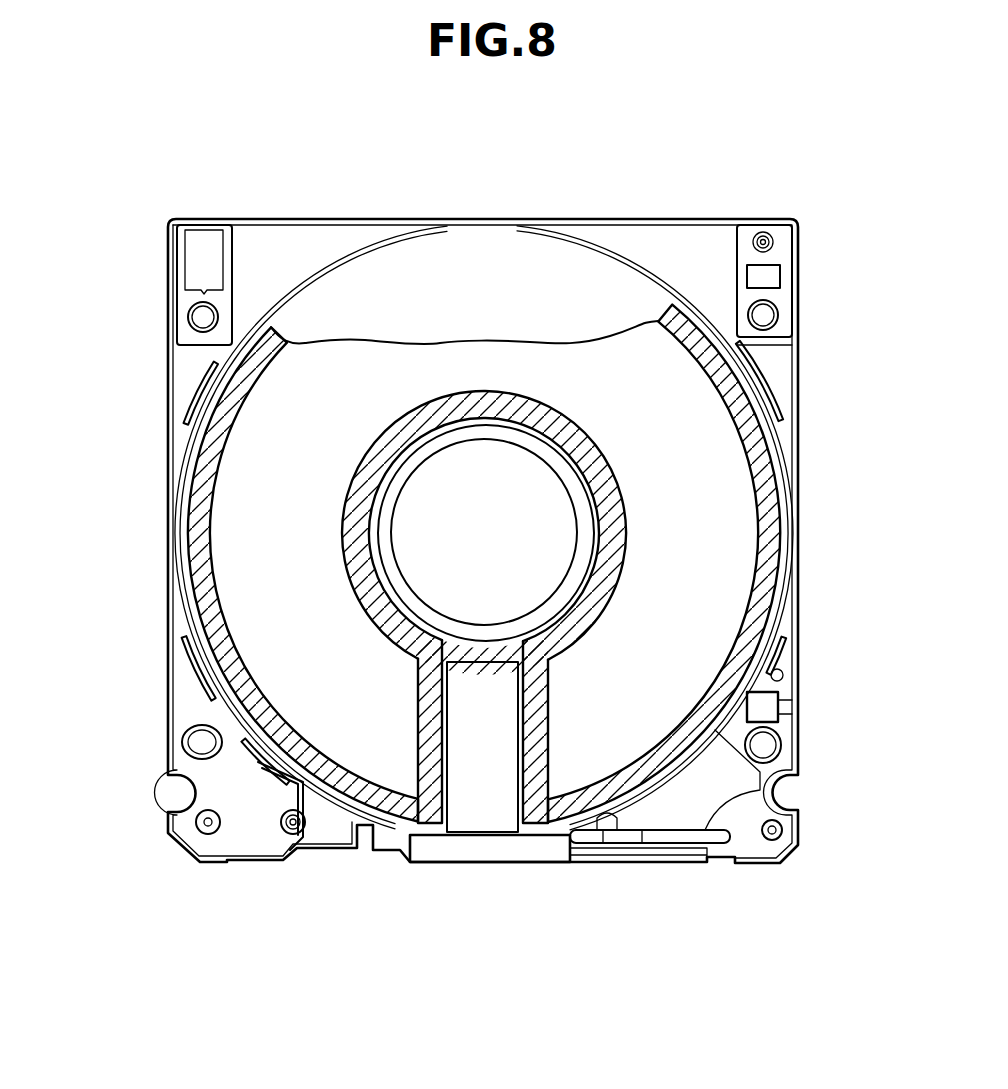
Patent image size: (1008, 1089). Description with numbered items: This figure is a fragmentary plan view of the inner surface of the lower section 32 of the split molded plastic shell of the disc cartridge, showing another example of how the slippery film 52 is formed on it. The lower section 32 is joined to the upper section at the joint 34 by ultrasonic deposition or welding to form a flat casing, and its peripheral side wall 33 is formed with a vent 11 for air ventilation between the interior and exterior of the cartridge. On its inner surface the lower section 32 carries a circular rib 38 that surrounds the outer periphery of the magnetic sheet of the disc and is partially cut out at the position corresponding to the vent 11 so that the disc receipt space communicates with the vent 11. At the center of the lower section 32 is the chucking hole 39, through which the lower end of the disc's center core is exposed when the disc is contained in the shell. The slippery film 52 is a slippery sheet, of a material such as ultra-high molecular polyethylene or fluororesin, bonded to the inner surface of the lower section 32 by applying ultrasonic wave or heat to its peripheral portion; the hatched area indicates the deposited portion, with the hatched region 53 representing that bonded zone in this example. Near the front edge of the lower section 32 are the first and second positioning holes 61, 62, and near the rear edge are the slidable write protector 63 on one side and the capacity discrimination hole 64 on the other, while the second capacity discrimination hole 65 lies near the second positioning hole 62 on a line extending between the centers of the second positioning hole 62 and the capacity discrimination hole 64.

The vent 11 is at (342, 853).
The lower section 32 is at (167, 280).
The peripheral side wall 33 is at (168, 401).
The joint 34 is at (757, 387).
The circular rib 38 is at (180, 628).
The chucking hole 39 is at (552, 493).
The slippery film 52 is at (622, 345).
The hub ring section 53 is at (775, 556).
The first positioning hole 61 is at (198, 737).
The second positioning hole 62 is at (765, 748).
The slidable write protector 63 is at (188, 313).
The capacity discrimination hole 64 is at (773, 278).
The second capacity discrimination hole 65 is at (765, 702).